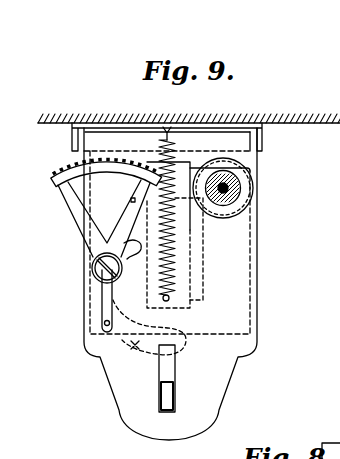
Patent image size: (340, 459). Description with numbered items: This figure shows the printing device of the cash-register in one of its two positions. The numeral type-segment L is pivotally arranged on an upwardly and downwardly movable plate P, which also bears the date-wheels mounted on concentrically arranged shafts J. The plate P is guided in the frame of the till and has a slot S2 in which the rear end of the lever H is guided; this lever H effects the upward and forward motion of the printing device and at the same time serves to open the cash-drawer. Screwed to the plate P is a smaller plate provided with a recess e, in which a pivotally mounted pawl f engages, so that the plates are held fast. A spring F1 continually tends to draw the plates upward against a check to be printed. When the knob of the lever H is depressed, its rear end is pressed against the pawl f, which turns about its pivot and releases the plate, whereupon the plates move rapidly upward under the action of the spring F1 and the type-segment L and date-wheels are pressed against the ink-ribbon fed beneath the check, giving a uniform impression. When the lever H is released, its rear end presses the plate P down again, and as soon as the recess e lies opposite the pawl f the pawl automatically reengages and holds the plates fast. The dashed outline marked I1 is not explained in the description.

The numeral type-segment L is at (70, 171).
The recess e is at (129, 246).
The pawl f is at (104, 296).
The spring F1 is at (176, 243).
The spring housing I1 is at (186, 285).
The shaft J is at (236, 187).
The slot S2 is at (173, 356).
The lever H is at (175, 393).
The plate P is at (167, 281).